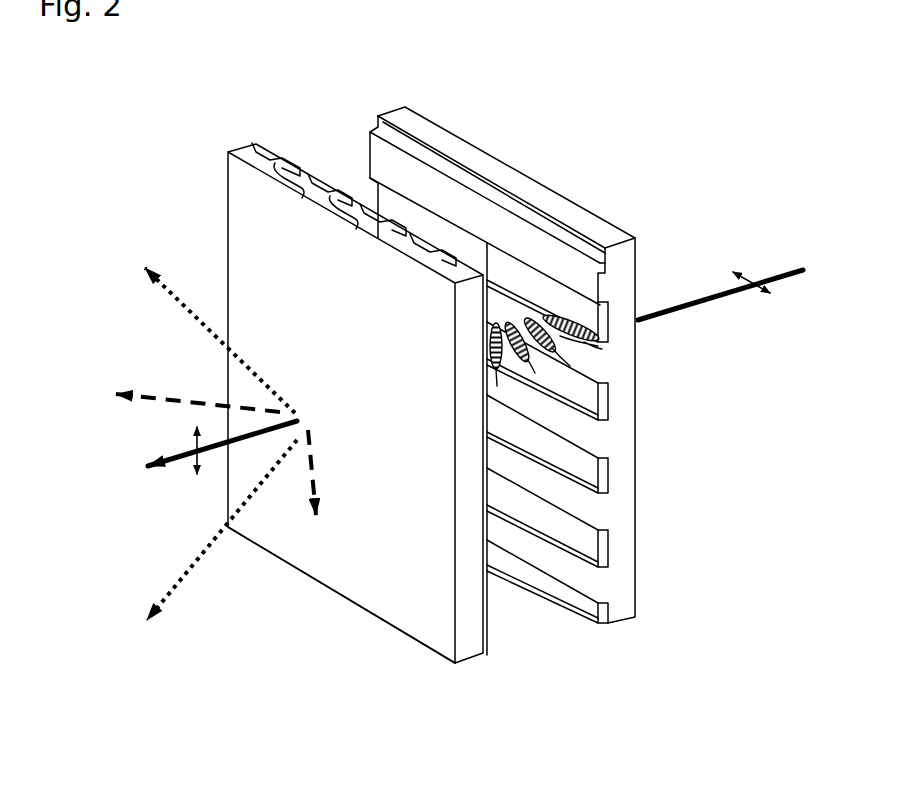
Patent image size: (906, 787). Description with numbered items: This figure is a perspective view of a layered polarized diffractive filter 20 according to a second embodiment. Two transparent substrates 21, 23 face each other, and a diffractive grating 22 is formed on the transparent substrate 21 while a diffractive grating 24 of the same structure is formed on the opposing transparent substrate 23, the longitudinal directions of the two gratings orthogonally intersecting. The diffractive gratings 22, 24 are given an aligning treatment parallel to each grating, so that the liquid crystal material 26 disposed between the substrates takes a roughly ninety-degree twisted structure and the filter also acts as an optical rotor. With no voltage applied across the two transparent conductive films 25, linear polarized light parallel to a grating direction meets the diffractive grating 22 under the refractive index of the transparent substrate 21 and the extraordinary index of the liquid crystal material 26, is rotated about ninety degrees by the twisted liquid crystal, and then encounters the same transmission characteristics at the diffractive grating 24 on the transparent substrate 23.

The layered polarized diffractive filter 20 is at (661, 622).
The transparent substrate 21 is at (628, 584).
The diffractive grating 22 is at (645, 443).
The transparent substrate 23 is at (428, 636).
The diffractive grating 24 is at (355, 403).
The transparent conductive film 25 is at (385, 124).
The liquid crystal material 26 is at (600, 357).